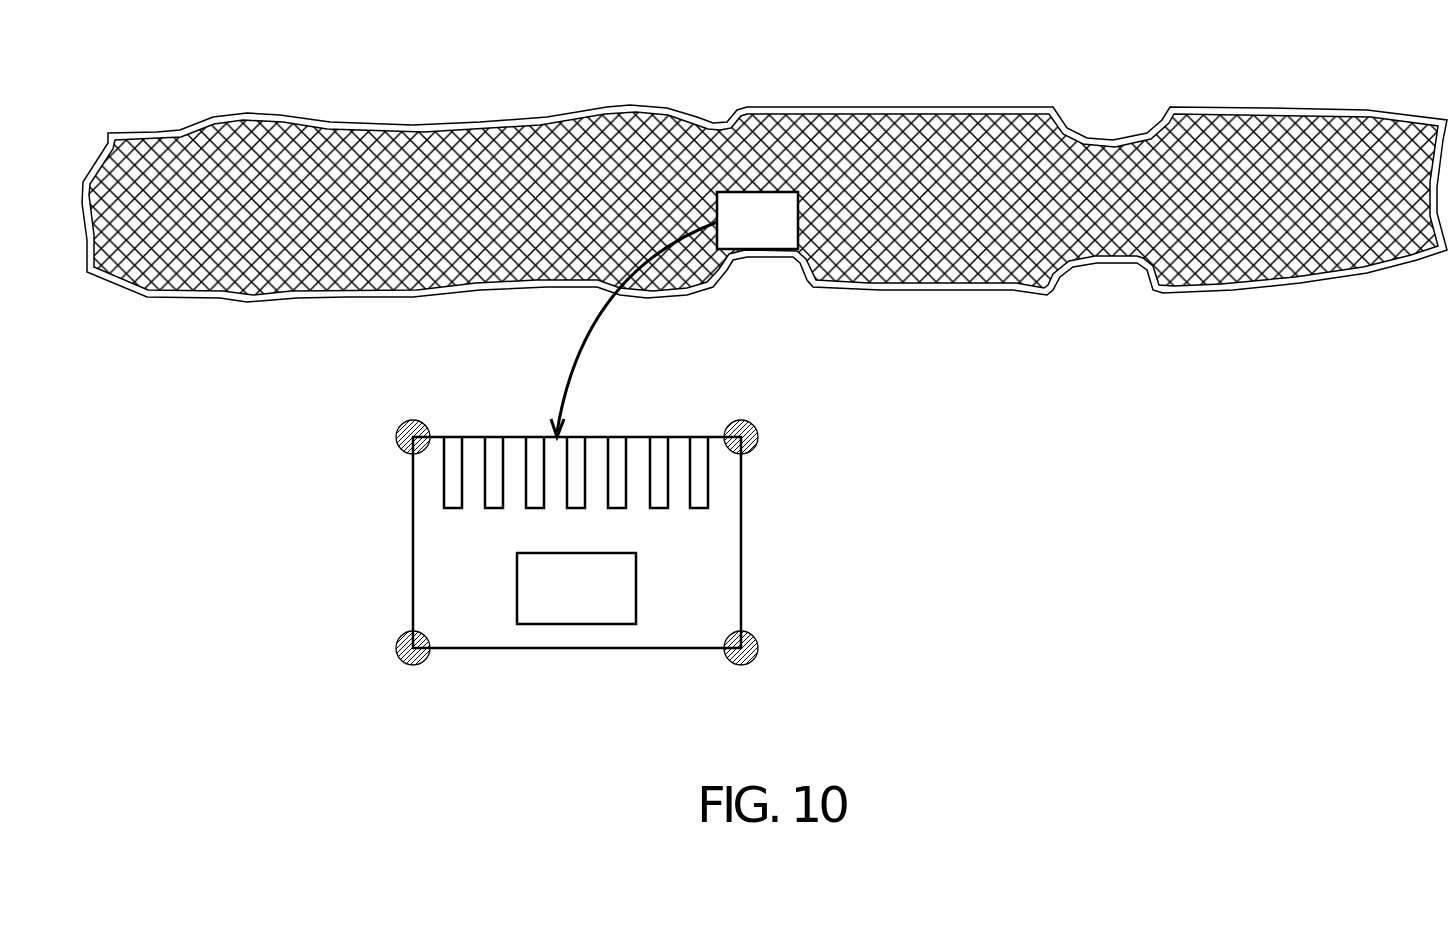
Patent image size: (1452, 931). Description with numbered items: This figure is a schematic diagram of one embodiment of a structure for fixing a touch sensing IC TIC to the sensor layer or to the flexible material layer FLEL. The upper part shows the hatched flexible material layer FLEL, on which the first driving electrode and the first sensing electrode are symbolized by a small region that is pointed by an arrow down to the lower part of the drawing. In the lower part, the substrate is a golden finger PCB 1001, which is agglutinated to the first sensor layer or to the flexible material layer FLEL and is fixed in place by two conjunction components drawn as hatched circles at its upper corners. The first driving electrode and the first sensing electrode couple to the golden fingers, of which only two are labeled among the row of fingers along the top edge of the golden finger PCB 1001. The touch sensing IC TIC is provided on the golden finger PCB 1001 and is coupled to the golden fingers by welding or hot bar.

The flexible material layer FLEL is at (1243, 128).
The golden finger PCB 1001 is at (479, 635).
The touch sensing IC TIC is at (576, 588).